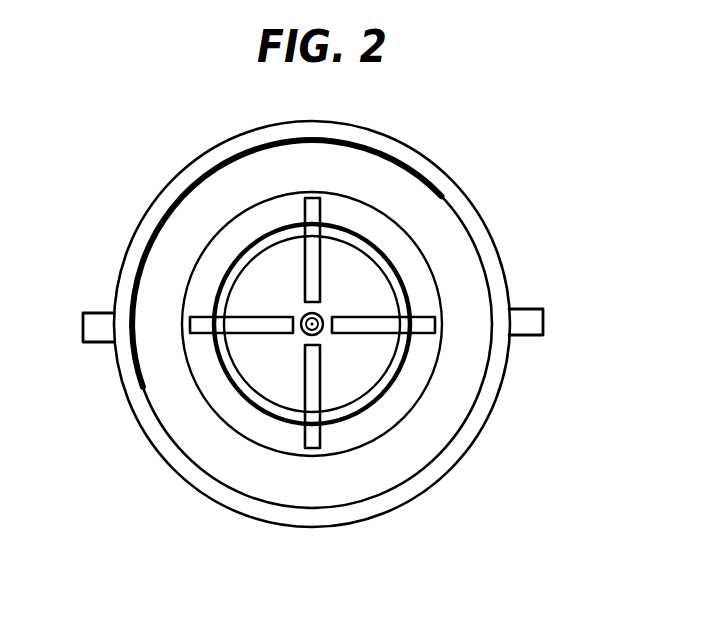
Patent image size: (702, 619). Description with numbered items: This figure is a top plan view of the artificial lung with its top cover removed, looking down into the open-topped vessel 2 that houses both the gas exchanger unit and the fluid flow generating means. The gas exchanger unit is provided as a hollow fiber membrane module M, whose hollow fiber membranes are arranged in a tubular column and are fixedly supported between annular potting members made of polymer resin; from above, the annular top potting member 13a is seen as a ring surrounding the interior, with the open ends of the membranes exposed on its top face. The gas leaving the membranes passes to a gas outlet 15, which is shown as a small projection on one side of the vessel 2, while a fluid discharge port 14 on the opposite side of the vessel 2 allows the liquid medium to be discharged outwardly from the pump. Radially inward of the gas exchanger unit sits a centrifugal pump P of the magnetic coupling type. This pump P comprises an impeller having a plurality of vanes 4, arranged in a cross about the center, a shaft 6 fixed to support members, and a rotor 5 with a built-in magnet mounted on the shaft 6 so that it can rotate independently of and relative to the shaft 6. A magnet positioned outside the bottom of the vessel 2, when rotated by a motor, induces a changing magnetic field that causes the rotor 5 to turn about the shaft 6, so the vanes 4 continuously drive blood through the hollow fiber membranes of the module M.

The vessel 2 is at (458, 458).
The vanes 4 is at (427, 330).
The rotor 5 is at (360, 267).
The shaft 6 is at (302, 318).
The top potting member 13a is at (460, 250).
The fluid discharge port 14 is at (99, 334).
The gas outlet 15 is at (527, 318).
The centrifugal pump P is at (363, 213).
The hollow fiber membrane module M is at (403, 465).